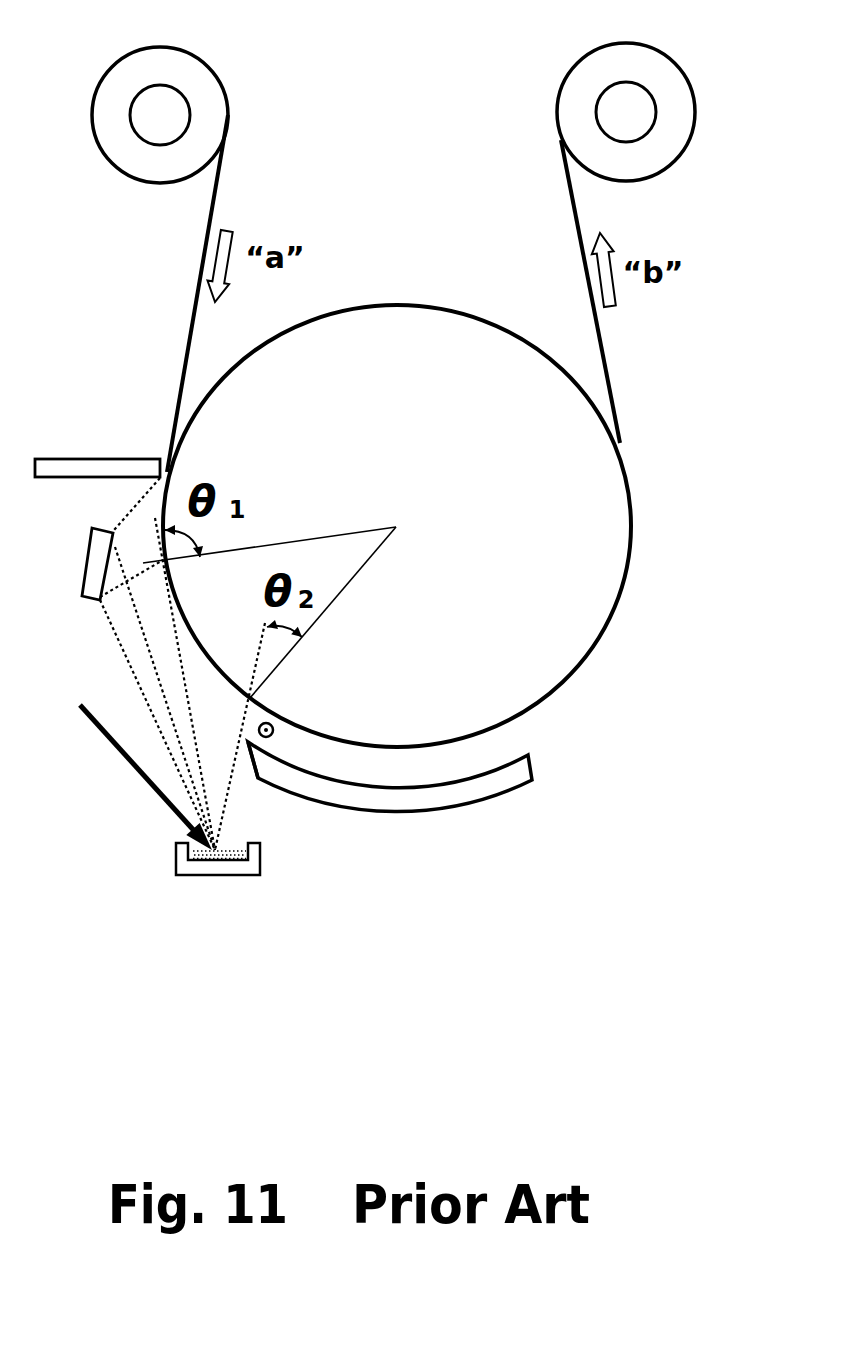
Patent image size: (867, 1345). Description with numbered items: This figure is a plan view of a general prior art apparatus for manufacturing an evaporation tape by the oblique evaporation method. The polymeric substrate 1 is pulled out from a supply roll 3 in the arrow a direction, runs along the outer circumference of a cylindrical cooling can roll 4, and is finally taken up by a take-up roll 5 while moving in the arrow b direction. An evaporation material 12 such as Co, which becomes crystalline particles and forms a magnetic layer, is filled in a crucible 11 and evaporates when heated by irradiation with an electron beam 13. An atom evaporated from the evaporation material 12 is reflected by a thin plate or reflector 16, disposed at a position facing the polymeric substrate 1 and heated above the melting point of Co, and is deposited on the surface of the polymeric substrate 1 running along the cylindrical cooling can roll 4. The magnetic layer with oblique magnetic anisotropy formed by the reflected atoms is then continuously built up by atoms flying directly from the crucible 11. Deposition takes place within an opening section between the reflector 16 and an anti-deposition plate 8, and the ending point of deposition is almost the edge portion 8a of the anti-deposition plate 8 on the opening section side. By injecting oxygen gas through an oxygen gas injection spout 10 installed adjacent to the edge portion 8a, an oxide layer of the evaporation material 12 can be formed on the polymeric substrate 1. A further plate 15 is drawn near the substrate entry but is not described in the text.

The polymeric substrate 1 is at (223, 166).
The supply roll 3 is at (130, 50).
The cylindrical cooling can roll 4 is at (404, 303).
The take-up roll 5 is at (653, 44).
The anti-deposition plate 8 is at (480, 803).
The edge portion of the anti-deposition plate 8a is at (250, 782).
The oxygen gas injection spout 10 is at (273, 735).
The crucible 11 is at (246, 882).
The evaporation material 12 is at (177, 856).
The electron beam 13 is at (120, 753).
The light shielding plate 15 is at (67, 458).
The reflector 16 is at (82, 574).